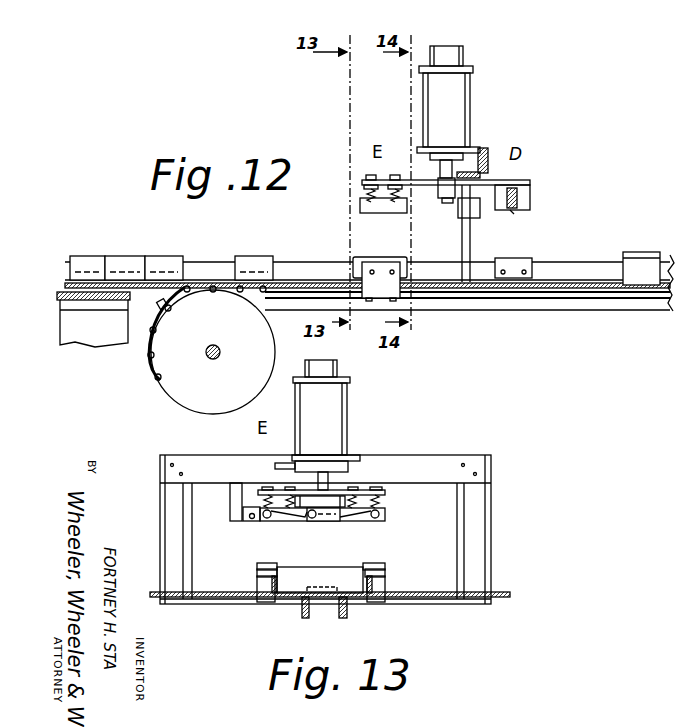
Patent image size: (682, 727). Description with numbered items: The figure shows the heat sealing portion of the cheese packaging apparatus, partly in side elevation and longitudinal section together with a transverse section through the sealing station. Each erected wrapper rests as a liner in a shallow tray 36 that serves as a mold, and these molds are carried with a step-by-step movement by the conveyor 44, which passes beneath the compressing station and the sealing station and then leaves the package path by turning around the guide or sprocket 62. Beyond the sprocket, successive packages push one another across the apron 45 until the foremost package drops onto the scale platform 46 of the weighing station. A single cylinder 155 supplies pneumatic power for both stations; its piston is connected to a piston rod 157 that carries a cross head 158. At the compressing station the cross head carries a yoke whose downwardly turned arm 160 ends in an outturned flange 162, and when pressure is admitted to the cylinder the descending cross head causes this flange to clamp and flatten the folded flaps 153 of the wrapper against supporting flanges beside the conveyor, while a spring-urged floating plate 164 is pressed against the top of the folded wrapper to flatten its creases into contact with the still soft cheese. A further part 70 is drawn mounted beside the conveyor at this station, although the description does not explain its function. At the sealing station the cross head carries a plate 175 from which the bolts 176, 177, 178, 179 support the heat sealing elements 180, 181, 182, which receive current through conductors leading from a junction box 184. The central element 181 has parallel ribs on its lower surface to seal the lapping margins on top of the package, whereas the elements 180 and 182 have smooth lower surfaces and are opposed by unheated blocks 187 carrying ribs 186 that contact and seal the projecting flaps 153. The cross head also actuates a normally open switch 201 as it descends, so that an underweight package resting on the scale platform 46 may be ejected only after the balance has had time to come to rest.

In FIG. 12, the tray 36 is at (160, 270).
In FIG. 13, the tray 36 is at (328, 580).
In FIG. 12, the conveyor 44 is at (585, 282).
In FIG. 13, the conveyor 44 is at (347, 600).
In FIG. 12, the apron 45 is at (170, 311).
In FIG. 12, the scale platform 46 is at (105, 300).
In FIG. 12, the sprocket 62 is at (175, 380).
In FIG. 12, the mounting block 70 is at (507, 258).
In FIG. 12, the flaps 153 is at (642, 252).
In FIG. 13, the flaps 153 is at (262, 566).
In FIG. 12, the cylinder 155 is at (452, 108).
In FIG. 13, the cylinder 155 is at (340, 405).
In FIG. 12, the piston rod 157 is at (446, 155).
In FIG. 13, the piston rod 157 is at (340, 435).
In FIG. 12, the cross head 158 is at (410, 178).
In FIG. 13, the cross head 158 is at (330, 488).
In FIG. 12, the downwardly turned arm 160 is at (530, 192).
In FIG. 12, the outturned flange 162 is at (530, 207).
In FIG. 12, the floating plate 164 is at (512, 212).
In FIG. 12, the plate 175 is at (364, 180).
In FIG. 13, the plate 175 is at (260, 490).
In FIG. 13, the bolt 176 is at (282, 488).
In FIG. 13, the bolt 177 is at (292, 488).
In FIG. 13, the bolt 178 is at (352, 490).
In FIG. 12, the bolt 179 is at (368, 196).
In FIG. 13, the bolt 179 is at (380, 491).
In FIG. 13, the heat sealing element 180 is at (266, 521).
In FIG. 13, the heat sealing element 181 is at (320, 522).
In FIG. 12, the heat sealing element 182 is at (395, 213).
In FIG. 13, the heat sealing element 182 is at (376, 521).
In FIG. 13, the junction box 184 is at (327, 522).
In FIG. 12, the ribs 186 is at (356, 272).
In FIG. 13, the ribs 186 is at (259, 573).
In FIG. 12, the blocks 187 is at (366, 262).
In FIG. 13, the blocks 187 is at (259, 586).
In FIG. 12, the normally open switch 201 is at (466, 218).
In FIG. 13, the normally open switch 201 is at (230, 521).